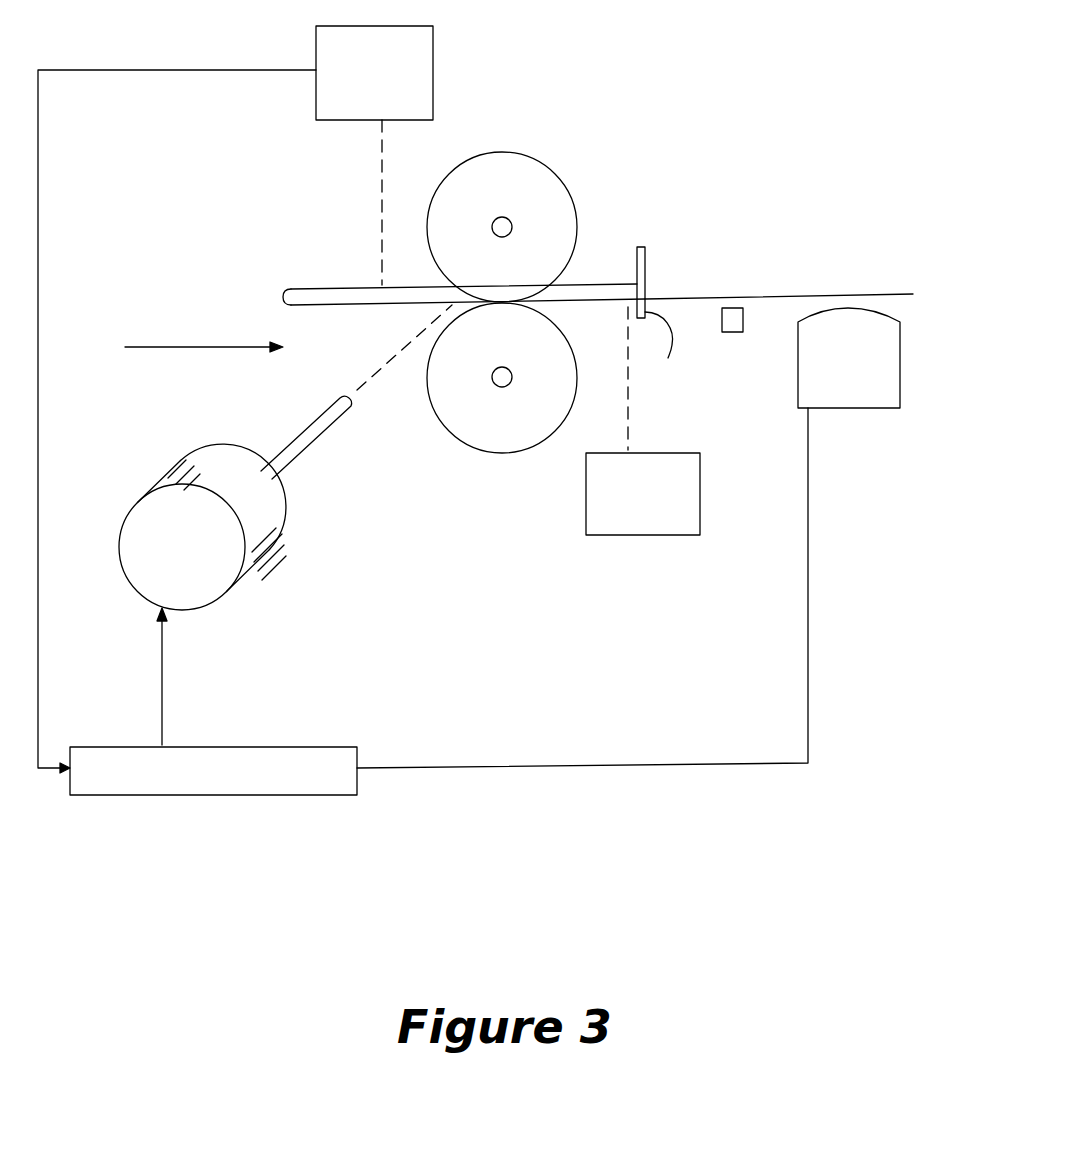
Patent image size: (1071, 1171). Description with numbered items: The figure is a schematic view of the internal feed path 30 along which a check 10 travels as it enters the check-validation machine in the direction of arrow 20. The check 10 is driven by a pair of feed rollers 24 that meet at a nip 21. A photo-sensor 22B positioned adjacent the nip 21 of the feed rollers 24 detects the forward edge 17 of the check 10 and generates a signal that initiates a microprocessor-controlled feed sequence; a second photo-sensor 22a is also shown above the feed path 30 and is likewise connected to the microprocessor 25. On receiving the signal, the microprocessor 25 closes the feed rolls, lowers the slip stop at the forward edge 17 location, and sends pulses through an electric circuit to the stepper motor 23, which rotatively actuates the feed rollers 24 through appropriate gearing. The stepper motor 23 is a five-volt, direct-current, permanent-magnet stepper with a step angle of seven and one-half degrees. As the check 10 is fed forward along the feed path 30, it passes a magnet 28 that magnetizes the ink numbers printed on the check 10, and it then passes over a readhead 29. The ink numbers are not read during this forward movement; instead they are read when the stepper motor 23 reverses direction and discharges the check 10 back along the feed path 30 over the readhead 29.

The check 10 is at (320, 289).
The forward edge 17 is at (634, 284).
The arrow 20 is at (190, 347).
The nip 21 is at (444, 283).
The photo-sensor 22a is at (316, 28).
The photo-sensor 22B is at (700, 495).
The stepper motor 23 is at (157, 560).
The feed rollers 24 is at (482, 460).
The microprocessor 25 is at (325, 746).
The magnet 28 is at (731, 318).
The readhead 29 is at (860, 408).
The feed path 30 is at (858, 294).